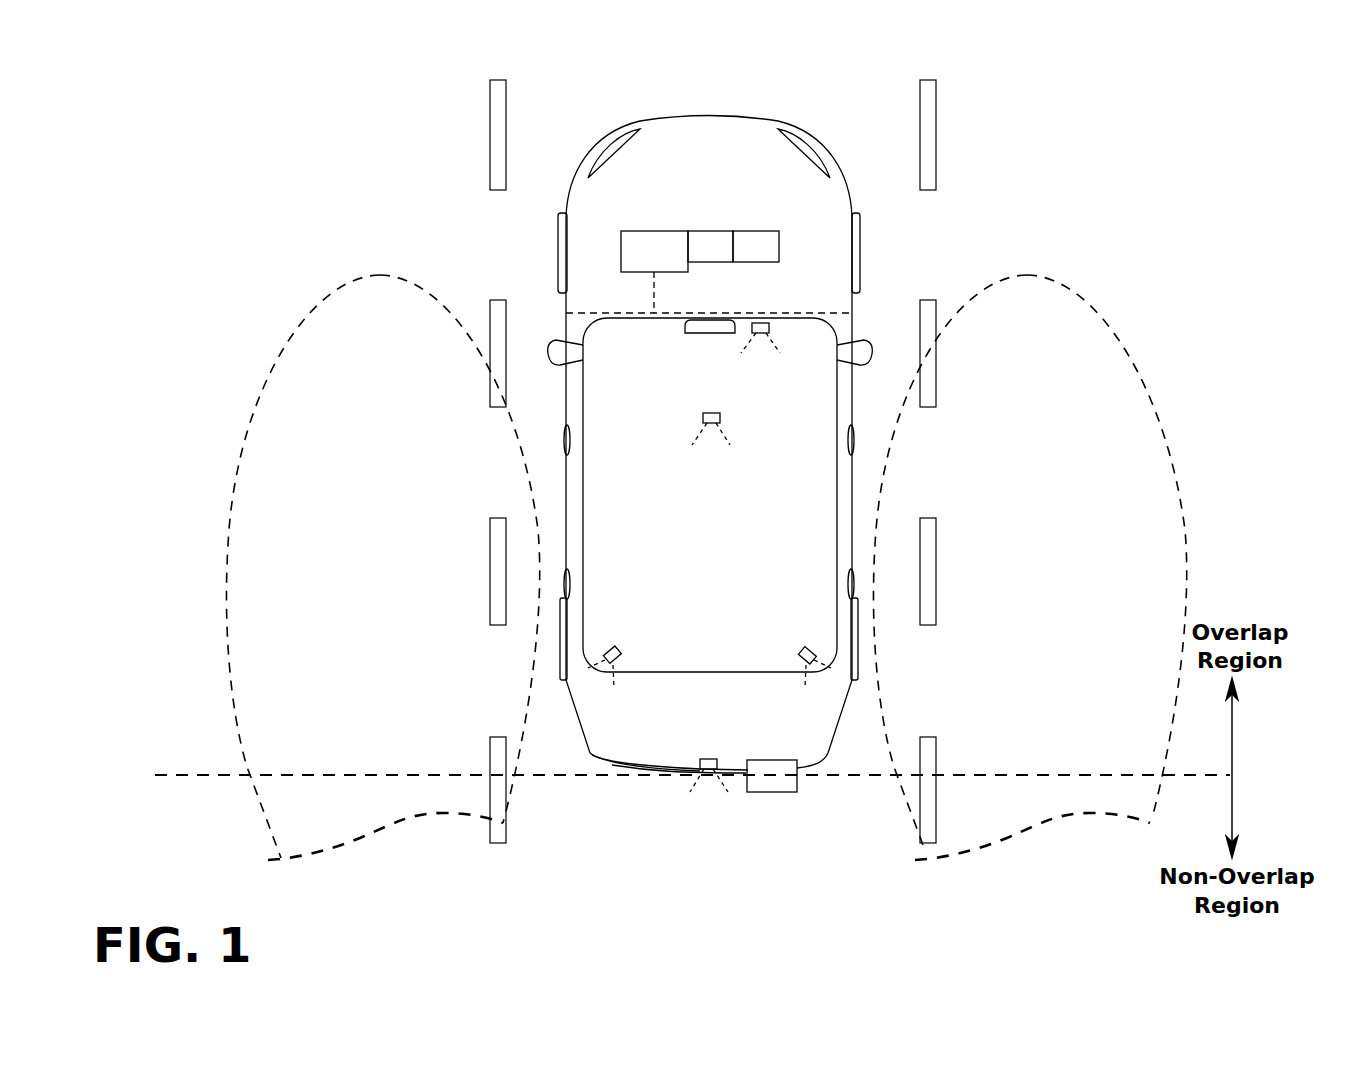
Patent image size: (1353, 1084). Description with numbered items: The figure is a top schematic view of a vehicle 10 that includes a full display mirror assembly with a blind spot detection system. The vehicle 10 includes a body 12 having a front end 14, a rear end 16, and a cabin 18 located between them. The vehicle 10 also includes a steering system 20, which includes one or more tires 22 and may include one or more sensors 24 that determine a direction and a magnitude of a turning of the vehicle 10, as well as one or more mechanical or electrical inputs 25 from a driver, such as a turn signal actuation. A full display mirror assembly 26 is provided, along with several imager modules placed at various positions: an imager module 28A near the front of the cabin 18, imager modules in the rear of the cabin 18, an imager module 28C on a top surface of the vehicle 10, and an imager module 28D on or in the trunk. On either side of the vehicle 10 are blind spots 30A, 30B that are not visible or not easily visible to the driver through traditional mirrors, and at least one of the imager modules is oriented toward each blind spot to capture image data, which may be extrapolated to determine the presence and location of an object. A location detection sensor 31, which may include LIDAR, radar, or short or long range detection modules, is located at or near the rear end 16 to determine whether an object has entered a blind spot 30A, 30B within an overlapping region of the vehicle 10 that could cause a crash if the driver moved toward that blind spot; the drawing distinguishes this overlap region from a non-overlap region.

The vehicle 10 is at (1040, 110).
The body 12 is at (823, 205).
The front end 14 is at (707, 115).
The rear end 16 is at (683, 777).
The cabin 18 is at (644, 477).
The steering system 20 is at (668, 264).
The tires 22 is at (860, 248).
The sensors 24 is at (724, 259).
The mechanical or electrical inputs 25 is at (770, 259).
The full display mirror assembly 26 is at (699, 336).
The imager module 28A is at (770, 331).
The imager module 28C is at (725, 421).
The imager module 28D is at (710, 757).
The blind spot 30A is at (362, 567).
The blind spot 30B is at (1084, 567).
The location detection sensor 31 is at (786, 788).